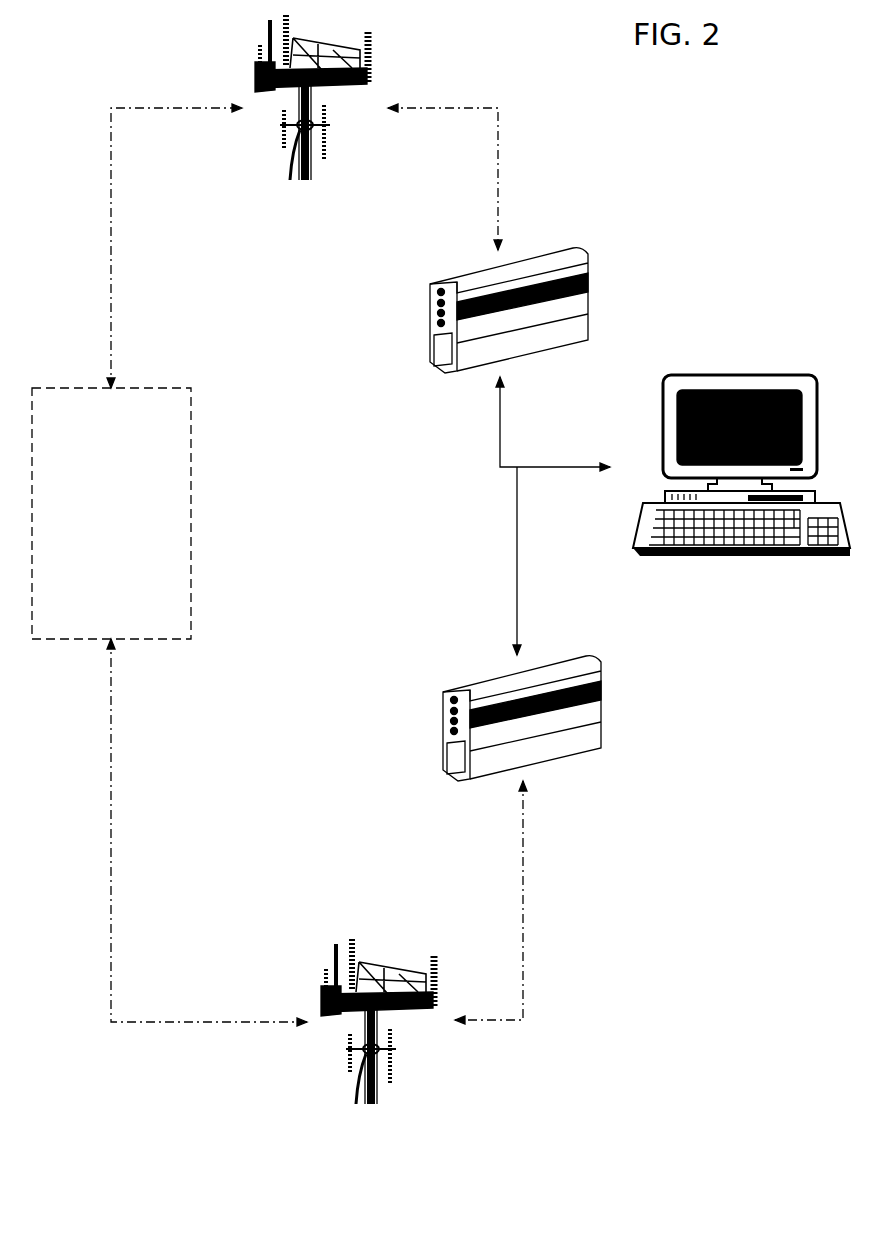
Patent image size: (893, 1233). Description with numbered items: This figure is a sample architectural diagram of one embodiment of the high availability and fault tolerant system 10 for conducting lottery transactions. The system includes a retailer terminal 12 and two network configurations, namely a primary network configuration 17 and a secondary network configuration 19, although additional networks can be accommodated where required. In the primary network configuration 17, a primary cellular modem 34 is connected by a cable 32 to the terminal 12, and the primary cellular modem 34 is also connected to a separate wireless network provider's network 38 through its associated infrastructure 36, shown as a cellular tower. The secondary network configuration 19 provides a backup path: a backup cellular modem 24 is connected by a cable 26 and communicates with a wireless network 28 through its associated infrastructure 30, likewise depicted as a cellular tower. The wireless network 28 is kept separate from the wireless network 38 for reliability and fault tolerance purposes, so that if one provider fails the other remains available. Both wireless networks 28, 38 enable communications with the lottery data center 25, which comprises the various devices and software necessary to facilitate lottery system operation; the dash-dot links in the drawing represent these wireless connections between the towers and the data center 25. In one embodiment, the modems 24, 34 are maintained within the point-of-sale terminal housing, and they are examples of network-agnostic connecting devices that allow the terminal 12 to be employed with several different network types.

The high availability and fault tolerant system 10 is at (760, 975).
The retailer terminal 12 is at (780, 375).
The primary network configuration 17 is at (668, 172).
The secondary network configuration 19 is at (739, 711).
The backup cellular modem 24 is at (443, 740).
The lottery data center 25 is at (191, 547).
The cable 26 is at (517, 565).
The wireless network 28 is at (108, 997).
The associated infrastructure 30 is at (328, 932).
The cable 32 is at (496, 440).
The primary cellular modem 34 is at (430, 325).
The associated infrastructure 36 is at (305, 190).
The wireless network 38 is at (113, 168).